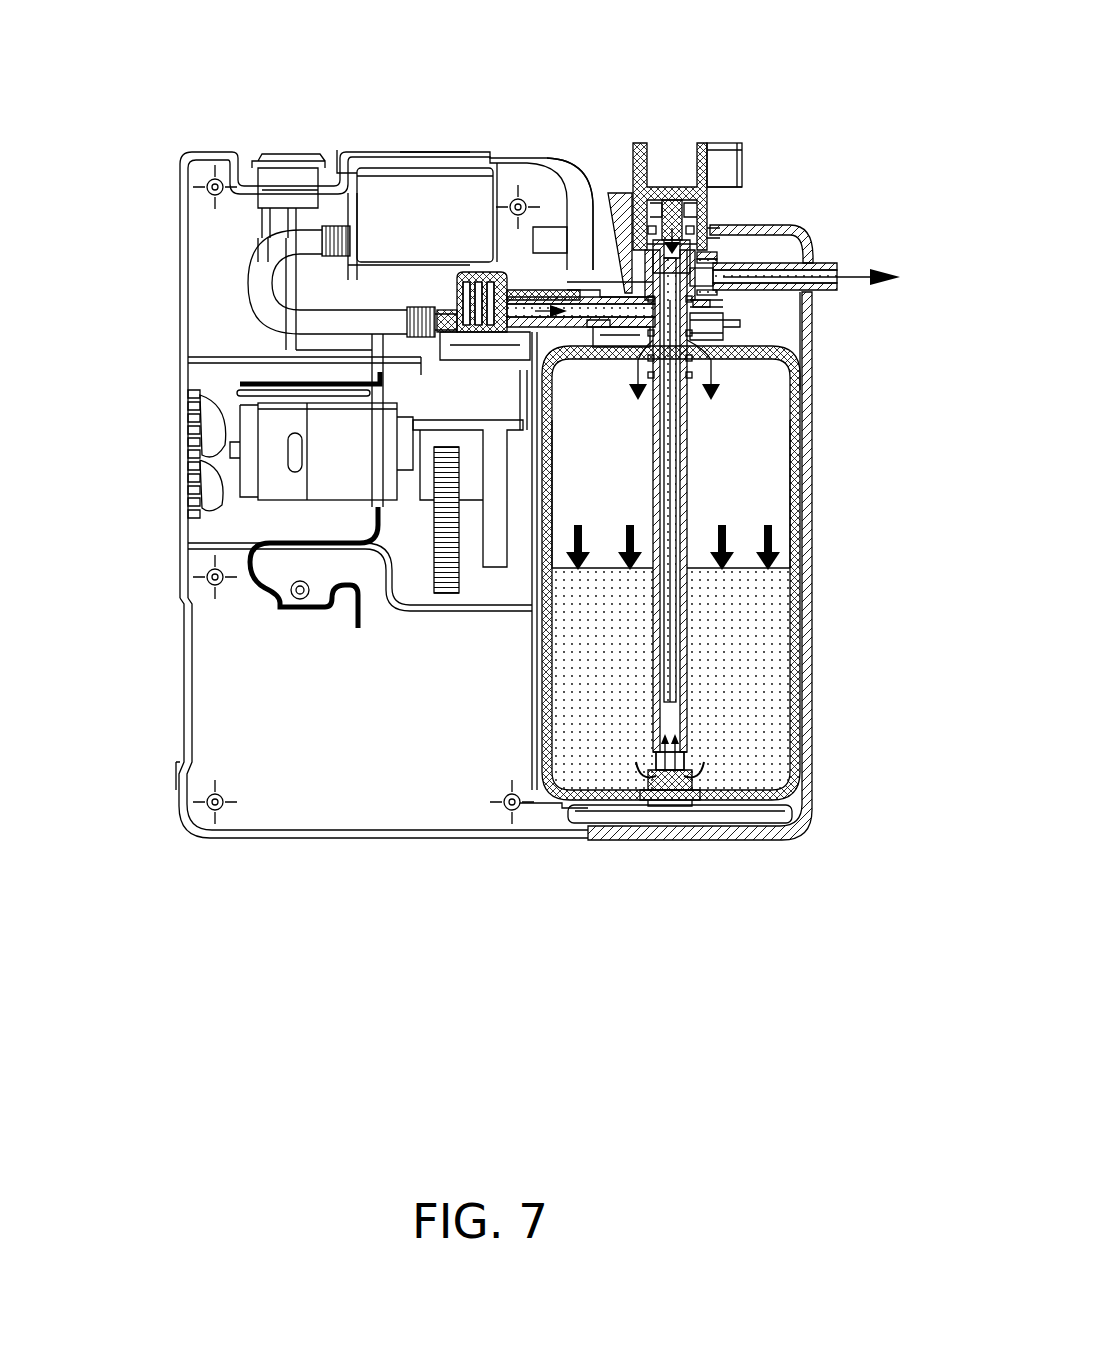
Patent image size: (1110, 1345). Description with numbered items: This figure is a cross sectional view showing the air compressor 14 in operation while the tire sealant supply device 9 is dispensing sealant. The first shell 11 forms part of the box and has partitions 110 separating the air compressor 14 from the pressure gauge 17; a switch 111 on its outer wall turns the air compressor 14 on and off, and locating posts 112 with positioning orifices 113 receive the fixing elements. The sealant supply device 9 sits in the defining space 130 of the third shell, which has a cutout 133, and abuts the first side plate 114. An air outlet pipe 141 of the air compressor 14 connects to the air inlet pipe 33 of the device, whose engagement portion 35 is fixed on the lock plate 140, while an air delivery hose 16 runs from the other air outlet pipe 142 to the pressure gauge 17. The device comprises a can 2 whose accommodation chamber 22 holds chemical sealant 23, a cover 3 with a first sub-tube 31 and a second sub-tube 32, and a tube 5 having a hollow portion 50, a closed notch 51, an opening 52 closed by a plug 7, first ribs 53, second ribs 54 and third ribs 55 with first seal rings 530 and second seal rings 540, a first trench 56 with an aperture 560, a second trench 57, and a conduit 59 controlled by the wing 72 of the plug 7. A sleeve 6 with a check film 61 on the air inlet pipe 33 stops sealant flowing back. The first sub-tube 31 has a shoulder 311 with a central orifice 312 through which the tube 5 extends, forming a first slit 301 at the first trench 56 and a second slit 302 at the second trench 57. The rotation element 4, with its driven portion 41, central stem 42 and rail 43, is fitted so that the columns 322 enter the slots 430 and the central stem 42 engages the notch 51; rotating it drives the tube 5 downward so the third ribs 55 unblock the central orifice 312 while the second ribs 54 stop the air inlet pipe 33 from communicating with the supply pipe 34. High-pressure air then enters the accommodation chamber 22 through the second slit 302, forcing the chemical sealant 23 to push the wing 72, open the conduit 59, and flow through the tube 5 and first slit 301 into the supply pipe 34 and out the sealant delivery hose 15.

The can 2 is at (800, 730).
The cover 3 is at (710, 320).
The rotation element 4 is at (642, 178).
The tube 5 is at (536, 706).
The sleeve 6 is at (567, 257).
The plug 7 is at (660, 797).
The tire sealant supply device 9 is at (814, 574).
The first shell 11 is at (180, 168).
The air compressor 14 is at (277, 418).
The sealant delivery hose 15 is at (837, 267).
The air delivery hose 16 is at (268, 263).
The pressure gauge 17 is at (383, 172).
The accommodation chamber 22 is at (735, 505).
The chemical sealant 23 is at (770, 612).
The first sub-tube 31 is at (645, 395).
The second sub-tube 32 is at (662, 197).
The air inlet pipe 33 is at (585, 332).
The supply pipe 34 is at (717, 260).
The engagement portion 35 is at (593, 253).
The driven portion 41 is at (727, 153).
The central stem 42 is at (673, 213).
The rail 43 is at (660, 203).
The hollow portion 50 is at (673, 677).
The closed notch 51 is at (697, 250).
The opening 52 is at (677, 757).
The first ribs 53 is at (710, 247).
The second ribs 54 is at (720, 297).
The third ribs 55 is at (687, 393).
The first trench 56 is at (643, 270).
The second trench 57 is at (722, 325).
The conduit 59 is at (685, 782).
The check film 61 is at (540, 257).
The wing 72 is at (680, 782).
The partitions 110 is at (237, 358).
The switch 111 is at (300, 160).
The locating posts 112 is at (203, 810).
The positioning orifice 113 is at (208, 808).
The first side plate 114 is at (536, 720).
The defining space 130 is at (797, 797).
The cutout 133 is at (710, 223).
The lock plate 140 is at (613, 270).
The air outlet pipe 141 is at (450, 210).
The air outlet pipe 142 is at (283, 300).
The first slit 301 is at (707, 277).
The second slit 302 is at (717, 338).
The shoulder 311 is at (690, 355).
The central orifice 312 is at (686, 370).
The columns 322 is at (708, 200).
The slots 430 is at (703, 240).
The first seal rings 530 is at (717, 257).
The second seal rings 540 is at (723, 310).
The aperture 560 is at (713, 263).